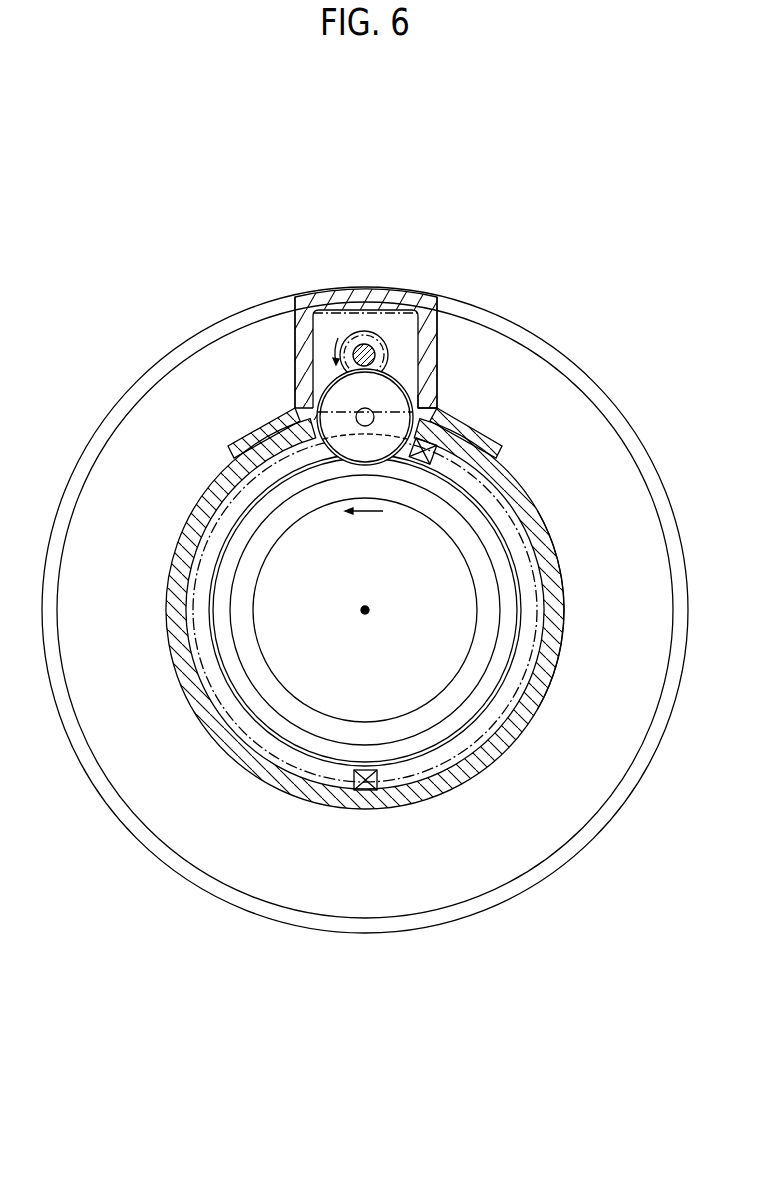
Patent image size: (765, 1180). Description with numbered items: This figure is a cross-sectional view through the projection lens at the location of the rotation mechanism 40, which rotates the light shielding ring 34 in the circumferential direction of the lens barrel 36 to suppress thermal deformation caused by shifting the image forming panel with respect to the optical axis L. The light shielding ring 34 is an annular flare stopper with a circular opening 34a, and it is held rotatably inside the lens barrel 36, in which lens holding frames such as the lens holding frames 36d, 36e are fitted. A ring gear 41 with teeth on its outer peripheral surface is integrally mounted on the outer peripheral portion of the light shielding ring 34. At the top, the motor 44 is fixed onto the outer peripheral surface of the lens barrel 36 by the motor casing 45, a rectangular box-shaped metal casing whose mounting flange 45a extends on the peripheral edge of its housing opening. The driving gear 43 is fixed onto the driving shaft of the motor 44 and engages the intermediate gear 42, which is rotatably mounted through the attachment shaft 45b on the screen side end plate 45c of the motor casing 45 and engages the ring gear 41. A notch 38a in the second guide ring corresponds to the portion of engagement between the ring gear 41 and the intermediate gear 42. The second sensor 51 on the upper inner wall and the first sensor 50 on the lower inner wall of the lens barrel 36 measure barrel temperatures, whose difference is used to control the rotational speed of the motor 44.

The rotation mechanism 40 is at (338, 288).
The motor 44 is at (381, 283).
The motor casing 45 is at (313, 296).
The mounting flange 45a is at (247, 443).
The attachment shaft 45b is at (440, 403).
The end plate 45c is at (327, 333).
The driving gear 43 is at (375, 343).
The intermediate gear 42 is at (390, 349).
The notch 38a is at (320, 455).
The ring gear 41 is at (475, 498).
The light shielding ring 34 is at (325, 728).
The circular opening 34a is at (460, 552).
The lens barrel 36 is at (518, 744).
The lens holding frame 36d is at (557, 607).
The lens holding frame 36e is at (561, 369).
The first sensor 50 is at (410, 800).
The second sensor 51 is at (417, 462).
The optical axis L is at (365, 610).